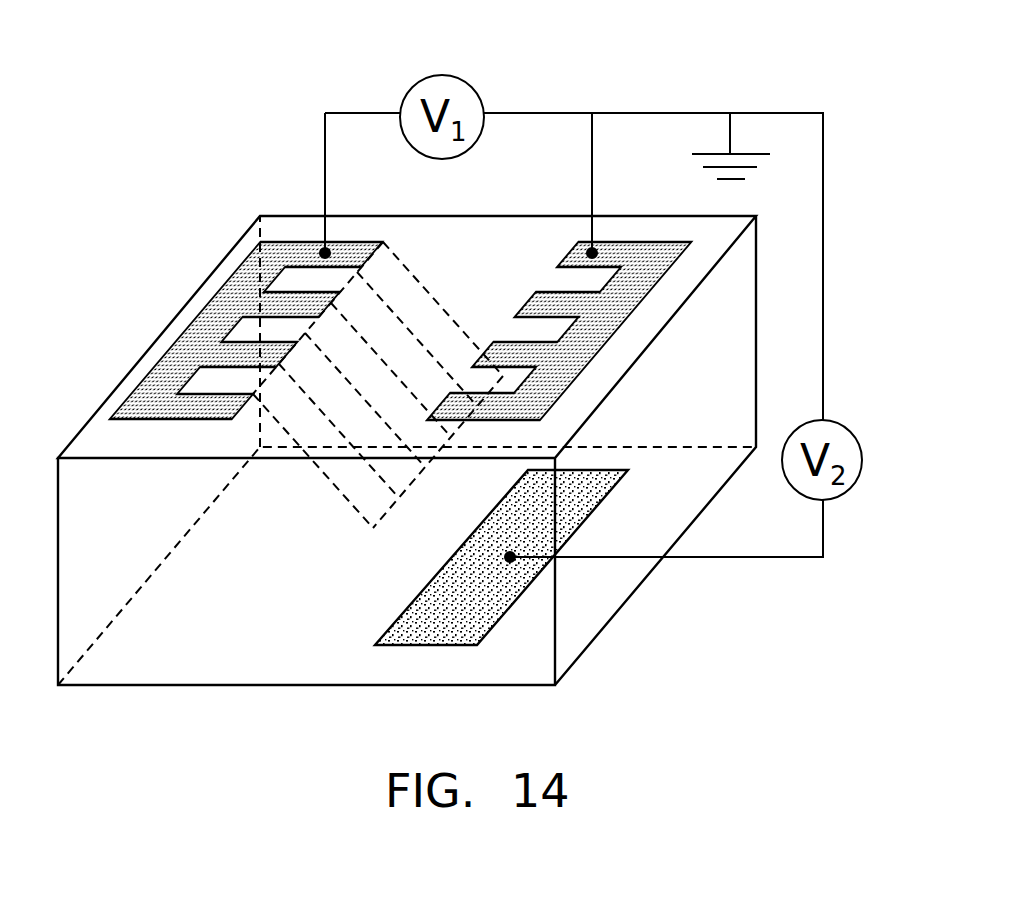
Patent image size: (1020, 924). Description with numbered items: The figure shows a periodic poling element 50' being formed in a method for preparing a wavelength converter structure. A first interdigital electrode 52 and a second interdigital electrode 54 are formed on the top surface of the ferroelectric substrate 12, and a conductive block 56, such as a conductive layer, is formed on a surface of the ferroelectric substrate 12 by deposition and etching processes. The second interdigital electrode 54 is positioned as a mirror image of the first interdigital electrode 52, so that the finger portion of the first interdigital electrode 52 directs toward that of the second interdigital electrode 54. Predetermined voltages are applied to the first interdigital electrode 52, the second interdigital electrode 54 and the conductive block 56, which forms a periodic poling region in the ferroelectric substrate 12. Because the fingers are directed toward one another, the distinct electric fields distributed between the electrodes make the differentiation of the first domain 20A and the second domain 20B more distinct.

The periodic poling element 50' is at (407, 389).
The ferroelectric substrate 12 is at (244, 608).
The first interdigital electrode 52 is at (228, 300).
The second interdigital electrode 54 is at (648, 253).
The conductive block 56 is at (422, 647).
The first domain 20A is at (398, 275).
The second domain 20B is at (440, 350).